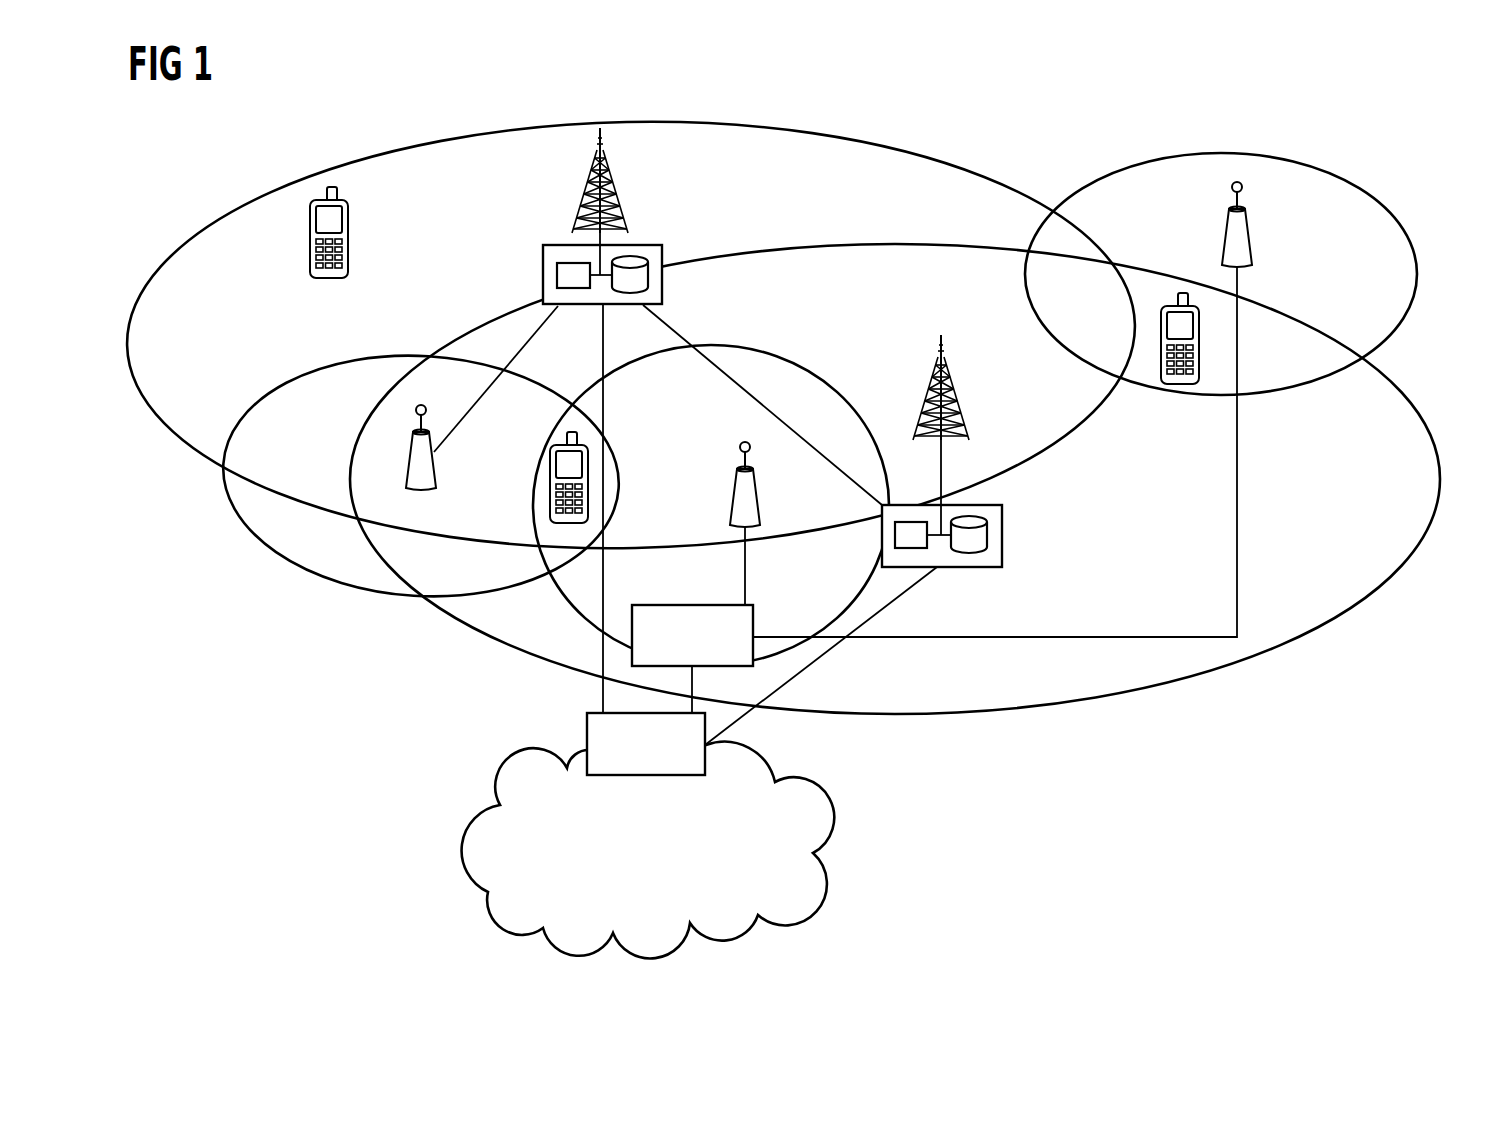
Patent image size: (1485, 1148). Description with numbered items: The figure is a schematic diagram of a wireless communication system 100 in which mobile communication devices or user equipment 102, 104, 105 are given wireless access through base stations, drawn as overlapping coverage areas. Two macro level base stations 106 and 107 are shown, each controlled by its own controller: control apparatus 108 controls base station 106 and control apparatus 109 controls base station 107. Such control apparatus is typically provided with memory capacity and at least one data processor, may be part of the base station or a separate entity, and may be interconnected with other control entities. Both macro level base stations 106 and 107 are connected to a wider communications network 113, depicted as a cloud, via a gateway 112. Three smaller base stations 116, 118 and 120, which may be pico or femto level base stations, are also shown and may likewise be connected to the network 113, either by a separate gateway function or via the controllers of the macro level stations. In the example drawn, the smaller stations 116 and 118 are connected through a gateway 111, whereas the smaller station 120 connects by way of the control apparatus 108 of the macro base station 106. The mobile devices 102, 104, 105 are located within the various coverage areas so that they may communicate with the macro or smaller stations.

The wireless communication system 100 is at (210, 177).
The mobile communication device 102 is at (309, 236).
The mobile communication device 104 is at (547, 484).
The mobile communication device 105 is at (1180, 386).
The macro level base station 106 is at (587, 186).
The macro level base station 107 is at (955, 393).
The control apparatus 108 is at (543, 265).
The control apparatus 109 is at (1003, 533).
The gateway 111 is at (755, 617).
The gateway 112 is at (587, 737).
The wider communications network 113 is at (457, 848).
The smaller base station 116 is at (1243, 188).
The smaller base station 118 is at (760, 494).
The smaller base station 120 is at (437, 468).